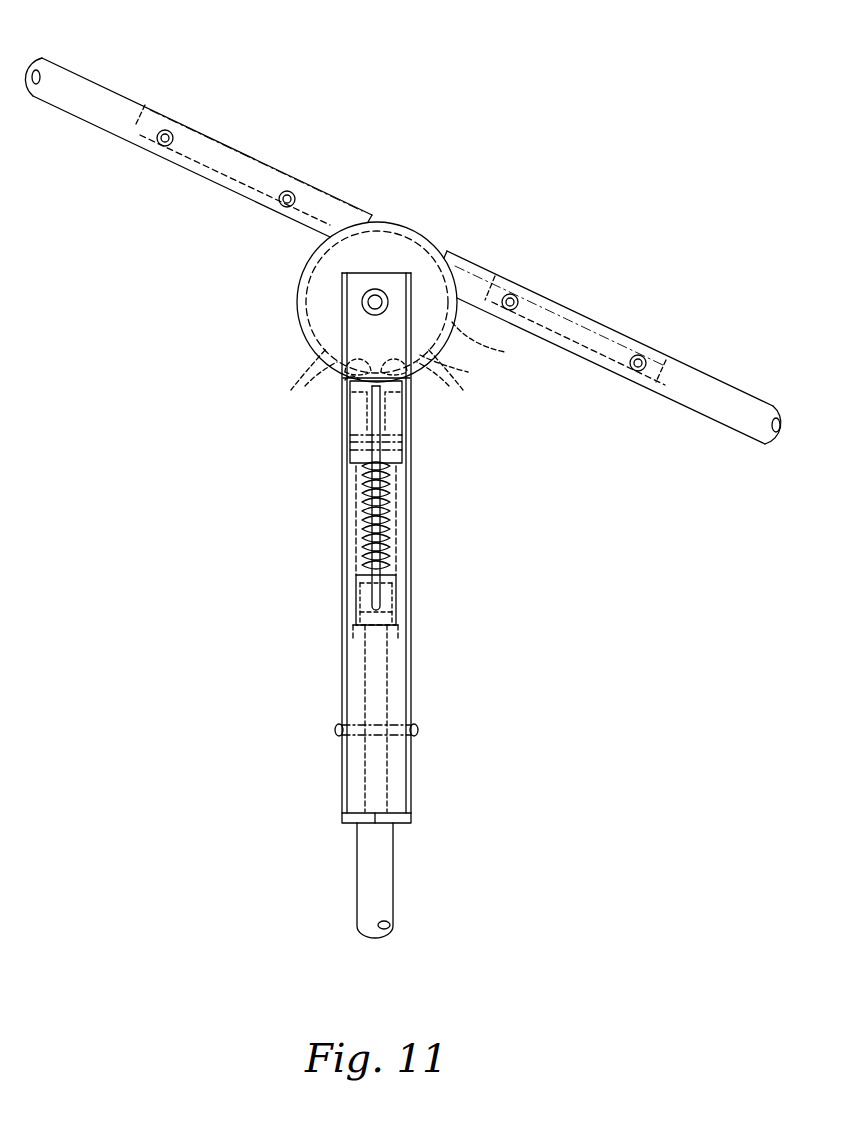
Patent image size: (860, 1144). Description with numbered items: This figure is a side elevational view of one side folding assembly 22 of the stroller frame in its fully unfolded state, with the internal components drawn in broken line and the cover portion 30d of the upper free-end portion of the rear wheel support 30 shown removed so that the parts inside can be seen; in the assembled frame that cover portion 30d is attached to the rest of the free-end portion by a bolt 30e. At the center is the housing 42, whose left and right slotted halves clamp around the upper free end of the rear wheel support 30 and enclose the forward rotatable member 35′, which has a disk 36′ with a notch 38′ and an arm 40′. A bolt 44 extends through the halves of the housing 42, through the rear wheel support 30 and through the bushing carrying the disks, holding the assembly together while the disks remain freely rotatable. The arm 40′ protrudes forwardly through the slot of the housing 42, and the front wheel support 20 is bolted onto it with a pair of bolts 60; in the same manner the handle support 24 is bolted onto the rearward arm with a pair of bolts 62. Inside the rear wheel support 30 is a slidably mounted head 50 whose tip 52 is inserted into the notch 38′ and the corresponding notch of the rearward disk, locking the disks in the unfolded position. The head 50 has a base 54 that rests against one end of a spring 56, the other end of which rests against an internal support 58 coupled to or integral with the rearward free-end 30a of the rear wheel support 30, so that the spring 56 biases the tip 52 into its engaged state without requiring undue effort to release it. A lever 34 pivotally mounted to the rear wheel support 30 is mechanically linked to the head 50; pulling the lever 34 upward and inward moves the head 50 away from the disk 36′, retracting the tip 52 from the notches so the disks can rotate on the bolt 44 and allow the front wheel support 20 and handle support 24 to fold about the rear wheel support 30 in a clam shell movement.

The front wheel support 20 is at (712, 376).
The folding assembly 22 is at (300, 276).
The handle support 24 is at (63, 68).
The rear wheel support 30 is at (410, 653).
The rearward free-end 30a is at (393, 863).
The cover portion 30d is at (355, 520).
The bolt 30e is at (420, 730).
The lever 34 is at (390, 598).
The forward rotatable member 35′ is at (496, 345).
The disk 36′ is at (297, 310).
The notch 38′ is at (427, 383).
The arm 40′ is at (583, 327).
The housing 42 is at (316, 248).
The bolt 44 is at (378, 289).
The head 50 is at (412, 415).
The tip 52 is at (340, 383).
The base 54 is at (398, 480).
The spring 56 is at (394, 527).
The internal support 58 is at (358, 597).
The bolts 60 is at (511, 294).
The bolts 62 is at (168, 130).